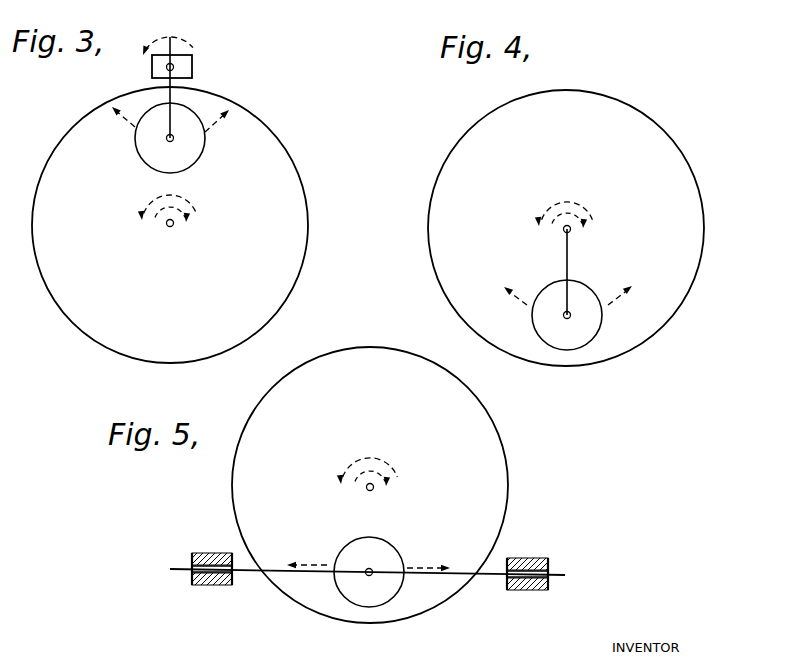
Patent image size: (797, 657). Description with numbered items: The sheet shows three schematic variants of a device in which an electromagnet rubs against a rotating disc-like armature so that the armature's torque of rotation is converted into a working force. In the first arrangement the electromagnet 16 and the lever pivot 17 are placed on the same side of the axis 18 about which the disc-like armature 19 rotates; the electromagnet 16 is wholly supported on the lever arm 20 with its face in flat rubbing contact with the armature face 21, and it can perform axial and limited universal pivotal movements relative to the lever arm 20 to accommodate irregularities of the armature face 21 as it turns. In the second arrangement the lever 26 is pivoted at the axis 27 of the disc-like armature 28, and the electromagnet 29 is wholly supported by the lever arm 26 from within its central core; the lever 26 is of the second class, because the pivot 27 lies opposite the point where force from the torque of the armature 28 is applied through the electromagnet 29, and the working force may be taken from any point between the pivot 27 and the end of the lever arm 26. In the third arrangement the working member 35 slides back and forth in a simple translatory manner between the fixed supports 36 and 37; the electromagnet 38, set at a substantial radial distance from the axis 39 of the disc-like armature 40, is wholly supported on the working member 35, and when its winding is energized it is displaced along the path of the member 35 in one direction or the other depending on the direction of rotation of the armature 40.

In FIG. 3, the electromagnet 16 is at (205, 148).
In FIG. 3, the lever pivot 17 is at (178, 61).
In FIG. 3, the axis 18 is at (173, 226).
In FIG. 3, the disc-like armature 19 is at (294, 152).
In FIG. 3, the lever arm 20 is at (173, 97).
In FIG. 3, the armature face 21 is at (241, 186).
In FIG. 4, the lever 26 is at (567, 267).
In FIG. 4, the axis 27 is at (563, 233).
In FIG. 4, the disc-like armature 28 is at (675, 140).
In FIG. 4, the electromagnet 29 is at (603, 325).
In FIG. 5, the working member 35 is at (497, 578).
In FIG. 5, the fixed support 36 is at (548, 562).
In FIG. 5, the fixed support 37 is at (192, 560).
In FIG. 5, the electromagnet 38 is at (397, 547).
In FIG. 5, the axis 39 is at (373, 491).
In FIG. 5, the disc-like armature 40 is at (505, 455).